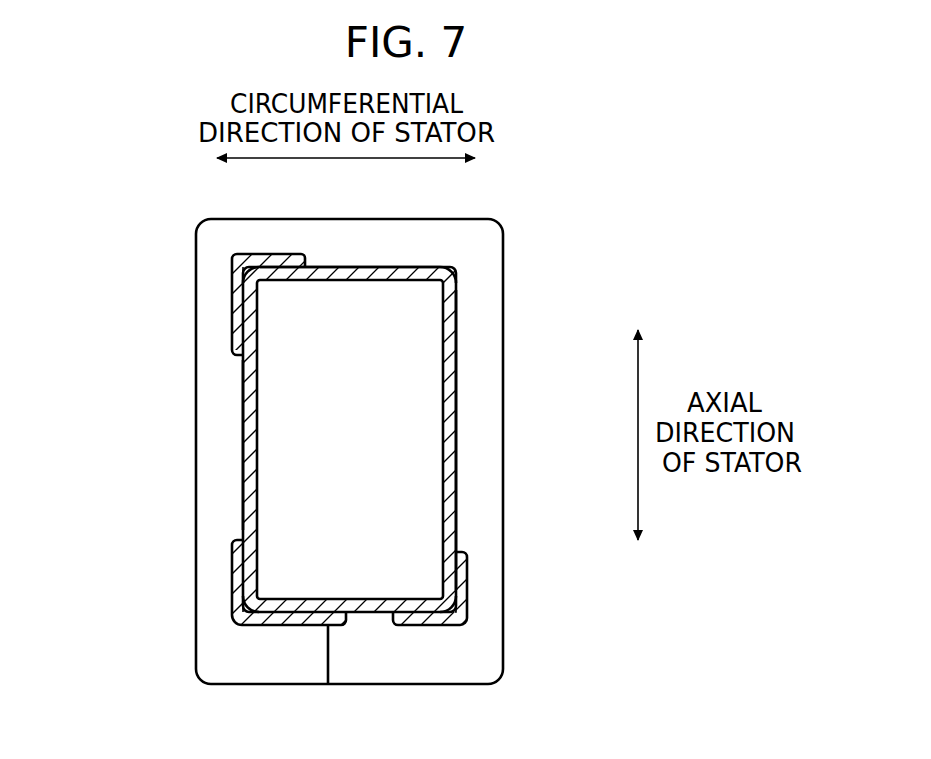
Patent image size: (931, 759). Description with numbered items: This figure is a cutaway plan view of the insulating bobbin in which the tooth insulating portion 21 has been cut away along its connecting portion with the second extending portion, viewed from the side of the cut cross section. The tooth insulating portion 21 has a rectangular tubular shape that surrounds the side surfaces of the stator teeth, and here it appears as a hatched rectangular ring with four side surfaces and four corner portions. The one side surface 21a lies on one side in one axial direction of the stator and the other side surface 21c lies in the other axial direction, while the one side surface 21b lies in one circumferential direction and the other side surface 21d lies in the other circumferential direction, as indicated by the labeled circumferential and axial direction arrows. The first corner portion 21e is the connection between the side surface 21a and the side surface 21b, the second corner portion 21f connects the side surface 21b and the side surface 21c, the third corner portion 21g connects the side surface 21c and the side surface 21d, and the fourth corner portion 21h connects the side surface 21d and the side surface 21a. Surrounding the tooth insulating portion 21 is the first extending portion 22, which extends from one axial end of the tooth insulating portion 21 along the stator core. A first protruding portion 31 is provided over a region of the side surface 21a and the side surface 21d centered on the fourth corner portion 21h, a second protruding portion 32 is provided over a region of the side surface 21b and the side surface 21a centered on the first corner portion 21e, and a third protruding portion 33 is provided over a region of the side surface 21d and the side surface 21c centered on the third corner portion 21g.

The tooth insulating portion 21 is at (456, 468).
The one side surface 21a is at (367, 613).
The one side surface 21b is at (456, 402).
The other side surface 21c is at (362, 267).
The other side surface 21d is at (243, 407).
The first corner portion 21e is at (465, 605).
The second corner portion 21f is at (445, 270).
The third corner portion 21g is at (247, 262).
The fourth corner portion 21h is at (241, 615).
The first extending portion 22 is at (503, 349).
The first protruding portion 31 is at (232, 566).
The second protruding portion 32 is at (467, 582).
The third protruding portion 33 is at (233, 298).